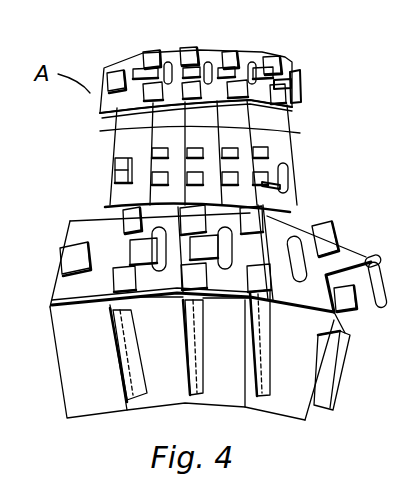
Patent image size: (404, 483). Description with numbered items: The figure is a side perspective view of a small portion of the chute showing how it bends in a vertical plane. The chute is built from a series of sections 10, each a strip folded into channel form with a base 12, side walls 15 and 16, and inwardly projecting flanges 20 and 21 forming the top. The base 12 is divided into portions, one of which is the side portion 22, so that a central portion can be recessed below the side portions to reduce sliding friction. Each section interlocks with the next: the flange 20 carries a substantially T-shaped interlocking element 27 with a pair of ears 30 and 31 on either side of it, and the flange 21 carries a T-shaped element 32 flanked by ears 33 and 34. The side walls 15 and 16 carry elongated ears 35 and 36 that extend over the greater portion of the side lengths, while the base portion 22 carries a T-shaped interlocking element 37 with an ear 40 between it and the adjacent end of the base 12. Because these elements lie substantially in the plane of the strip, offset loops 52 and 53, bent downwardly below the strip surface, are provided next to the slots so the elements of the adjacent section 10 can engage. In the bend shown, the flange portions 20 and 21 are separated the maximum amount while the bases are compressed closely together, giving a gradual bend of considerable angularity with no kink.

The section 10 is at (160, 395).
The base 12 is at (252, 193).
The side wall 15 is at (162, 118).
The side wall 16 is at (75, 372).
The flange 20 is at (265, 83).
The flange 21 is at (70, 283).
The base portion 22 is at (117, 192).
The T-shaped interlocking element 27 is at (167, 63).
The ear 30 is at (97, 110).
The ear 31 is at (145, 57).
The T-shaped element 32 is at (344, 272).
The ear 33 is at (112, 290).
The ear 34 is at (130, 217).
The elongated ear 35 is at (352, 312).
The elongated ear 36 is at (132, 345).
The T-shaped interlocking element 37 is at (289, 174).
The ear 40 is at (268, 153).
The offset loop 52 is at (143, 73).
The offset loop 53 is at (115, 167).